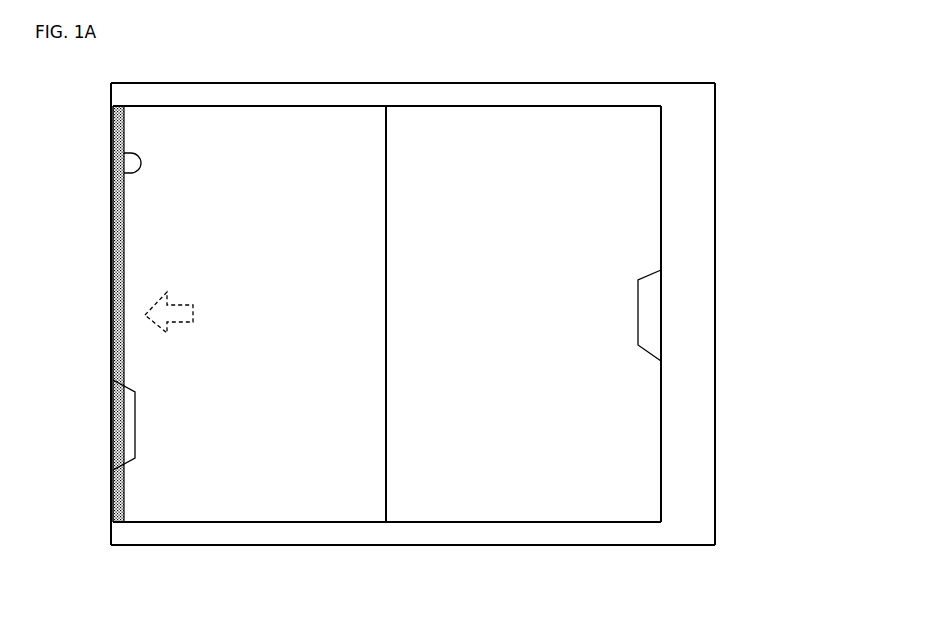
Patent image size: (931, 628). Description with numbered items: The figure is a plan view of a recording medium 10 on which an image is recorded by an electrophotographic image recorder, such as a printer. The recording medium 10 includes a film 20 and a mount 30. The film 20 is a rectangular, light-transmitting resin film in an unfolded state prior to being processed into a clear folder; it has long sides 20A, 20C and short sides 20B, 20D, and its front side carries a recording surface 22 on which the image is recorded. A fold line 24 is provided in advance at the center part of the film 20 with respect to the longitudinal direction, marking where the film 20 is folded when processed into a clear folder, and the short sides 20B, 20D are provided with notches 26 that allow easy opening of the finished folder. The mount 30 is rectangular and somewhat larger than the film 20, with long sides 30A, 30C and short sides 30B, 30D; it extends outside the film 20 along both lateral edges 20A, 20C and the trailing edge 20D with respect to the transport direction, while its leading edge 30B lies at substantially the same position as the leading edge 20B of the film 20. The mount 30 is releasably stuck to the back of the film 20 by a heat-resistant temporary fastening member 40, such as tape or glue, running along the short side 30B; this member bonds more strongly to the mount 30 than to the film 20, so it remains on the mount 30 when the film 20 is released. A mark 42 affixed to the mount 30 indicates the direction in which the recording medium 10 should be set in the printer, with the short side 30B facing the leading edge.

The recording medium 10 is at (704, 50).
The film 20 is at (665, 222).
The long side of the film 20A is at (536, 105).
The short side of the film 20B is at (112, 328).
The long side of the film 20C is at (468, 524).
The short side of the film 20D is at (661, 382).
The recording surface 22 is at (640, 427).
The fold line 24 is at (386, 126).
The notches 26 is at (130, 161).
The mount 30 is at (719, 170).
The long side of the mount 30A is at (313, 83).
The short side of the mount 30B is at (112, 534).
The long side of the mount 30C is at (288, 546).
The short side of the mount 30D is at (716, 485).
The temporary fastening member 40 is at (118, 250).
The mark 42 is at (193, 305).